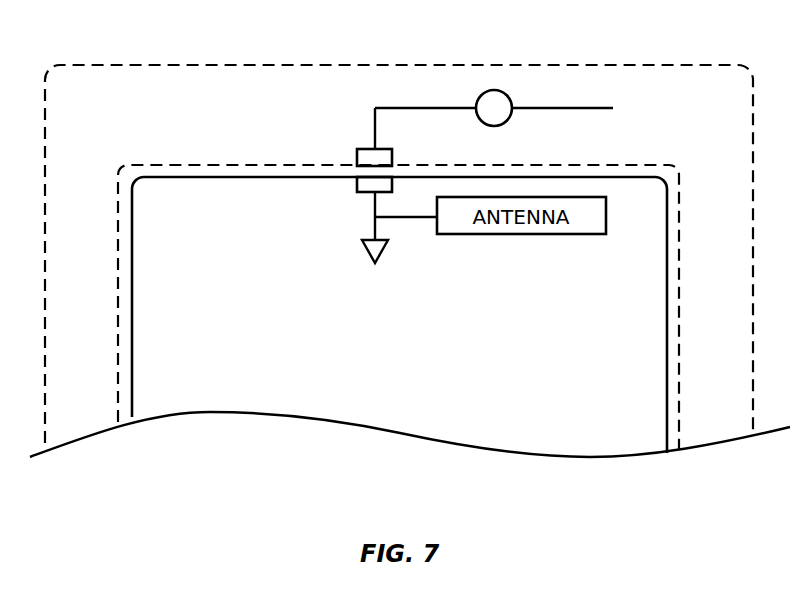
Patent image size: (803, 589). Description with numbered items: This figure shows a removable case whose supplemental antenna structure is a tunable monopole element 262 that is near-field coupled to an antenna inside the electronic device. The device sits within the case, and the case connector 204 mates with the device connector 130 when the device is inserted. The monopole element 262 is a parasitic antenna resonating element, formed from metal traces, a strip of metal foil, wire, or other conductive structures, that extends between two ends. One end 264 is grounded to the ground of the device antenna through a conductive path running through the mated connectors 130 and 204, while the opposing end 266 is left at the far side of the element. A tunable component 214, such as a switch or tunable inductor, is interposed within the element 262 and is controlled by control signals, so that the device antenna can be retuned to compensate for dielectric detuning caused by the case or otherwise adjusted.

The tunable monopole element 262 is at (435, 92).
The tunable component 214 is at (494, 90).
The end 266 is at (573, 108).
The end 264 is at (376, 122).
The connector 204 is at (356, 157).
The connector 130 is at (357, 187).